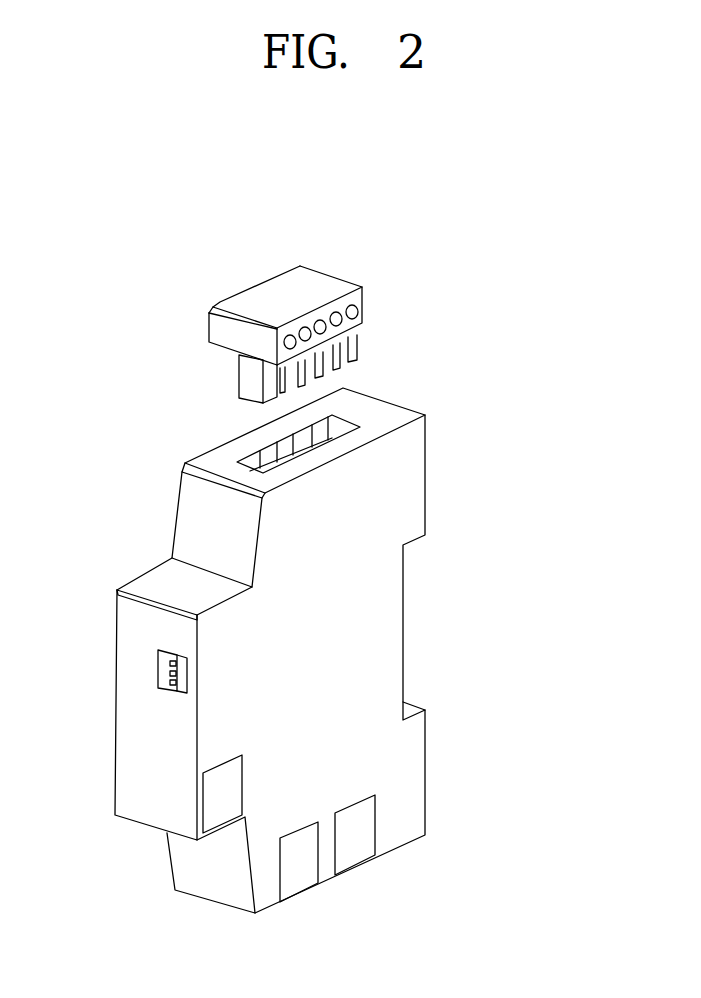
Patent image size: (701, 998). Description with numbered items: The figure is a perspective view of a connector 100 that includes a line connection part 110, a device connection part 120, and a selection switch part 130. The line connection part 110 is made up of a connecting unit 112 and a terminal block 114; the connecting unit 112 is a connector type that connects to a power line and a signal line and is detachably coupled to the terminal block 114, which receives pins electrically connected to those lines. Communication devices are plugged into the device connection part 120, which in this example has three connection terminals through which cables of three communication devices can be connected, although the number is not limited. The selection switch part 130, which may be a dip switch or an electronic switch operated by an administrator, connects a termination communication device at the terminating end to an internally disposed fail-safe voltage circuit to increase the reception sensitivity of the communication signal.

The connector 100 is at (118, 302).
The line connection part 110 is at (480, 297).
The connecting unit 112 is at (363, 313).
The terminal block 114 is at (342, 428).
The device connection part 120 is at (218, 822).
The selection switch part 130 is at (158, 675).